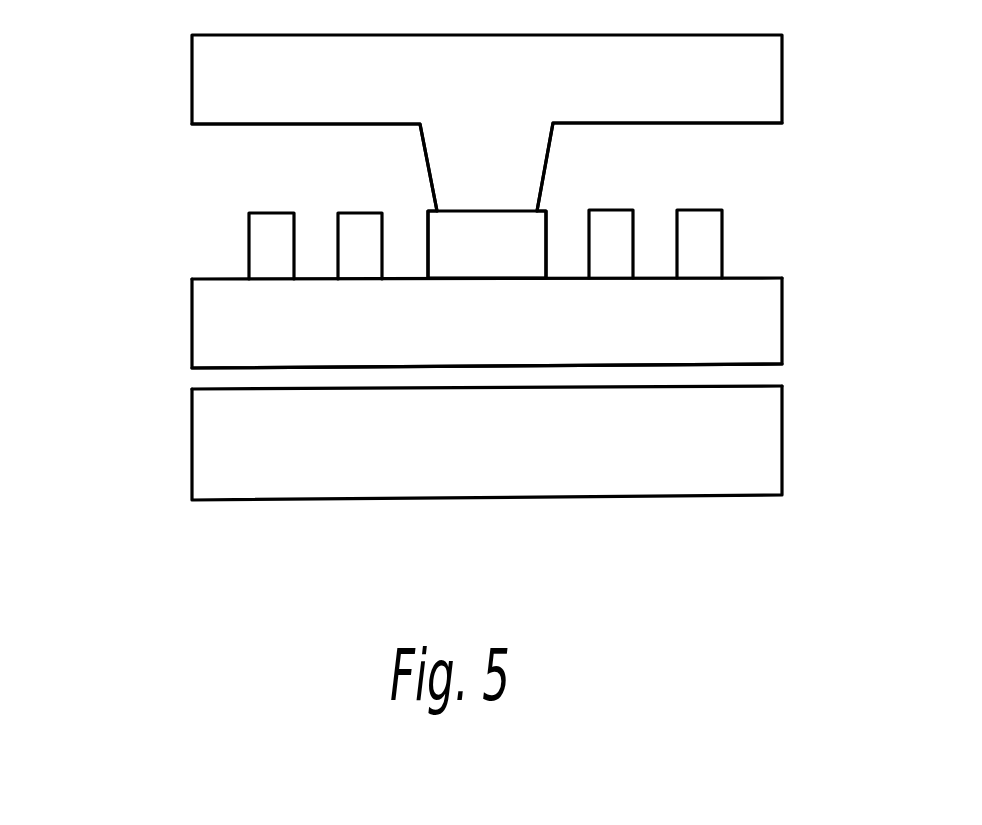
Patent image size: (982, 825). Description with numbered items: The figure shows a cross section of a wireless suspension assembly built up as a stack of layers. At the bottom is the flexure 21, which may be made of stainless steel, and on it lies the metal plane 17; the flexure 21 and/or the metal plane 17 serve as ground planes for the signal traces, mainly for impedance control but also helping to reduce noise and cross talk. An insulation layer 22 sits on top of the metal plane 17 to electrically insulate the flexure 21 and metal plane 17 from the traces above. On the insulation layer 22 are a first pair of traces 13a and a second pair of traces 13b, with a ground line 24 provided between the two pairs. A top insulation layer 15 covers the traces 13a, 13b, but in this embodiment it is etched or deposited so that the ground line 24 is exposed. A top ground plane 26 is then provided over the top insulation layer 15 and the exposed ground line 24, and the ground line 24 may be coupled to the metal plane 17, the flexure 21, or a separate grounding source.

The top ground plane 26 is at (278, 72).
The top insulation layer 15 is at (241, 181).
The first pair of traces 13a is at (251, 258).
The second pair of traces 13b is at (712, 220).
The ground line 24 is at (526, 242).
The insulation layer 22 is at (260, 340).
The metal plane 17 is at (680, 376).
The flexure 21 is at (260, 444).